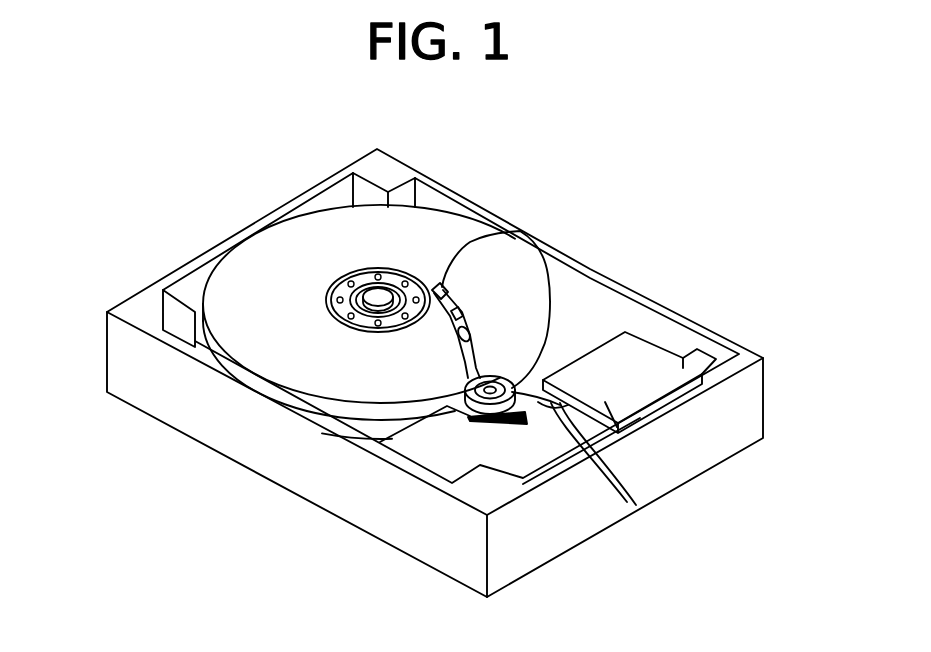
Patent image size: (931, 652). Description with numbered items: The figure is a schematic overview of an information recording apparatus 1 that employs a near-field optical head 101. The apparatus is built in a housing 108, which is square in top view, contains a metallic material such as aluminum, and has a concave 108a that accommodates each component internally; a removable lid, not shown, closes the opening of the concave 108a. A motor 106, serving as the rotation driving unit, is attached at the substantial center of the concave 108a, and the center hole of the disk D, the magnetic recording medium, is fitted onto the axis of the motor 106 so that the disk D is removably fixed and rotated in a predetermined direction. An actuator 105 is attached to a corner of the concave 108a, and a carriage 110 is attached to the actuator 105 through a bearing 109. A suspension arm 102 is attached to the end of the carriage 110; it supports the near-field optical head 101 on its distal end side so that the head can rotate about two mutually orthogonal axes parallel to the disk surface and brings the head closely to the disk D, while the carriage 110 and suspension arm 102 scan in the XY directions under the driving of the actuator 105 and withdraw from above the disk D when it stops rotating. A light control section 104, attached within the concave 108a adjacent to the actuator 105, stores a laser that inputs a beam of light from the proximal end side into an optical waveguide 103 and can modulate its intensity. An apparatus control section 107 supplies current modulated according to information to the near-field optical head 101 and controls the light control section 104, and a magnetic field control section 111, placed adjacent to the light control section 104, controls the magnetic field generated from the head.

The information recording apparatus 1 is at (731, 115).
The near-field optical head 101 is at (520, 231).
The suspension arm 102 is at (490, 390).
The optical waveguide 103 is at (627, 502).
The light control section 104 is at (636, 382).
The actuator 105 is at (445, 452).
The motor 106 is at (376, 295).
The apparatus control section 107 is at (658, 357).
The housing 108 is at (227, 240).
The concave 108a is at (200, 287).
The bearing 109 is at (540, 377).
The carriage 110 is at (553, 295).
The magnetic field control section 111 is at (624, 345).
The disk D is at (378, 427).